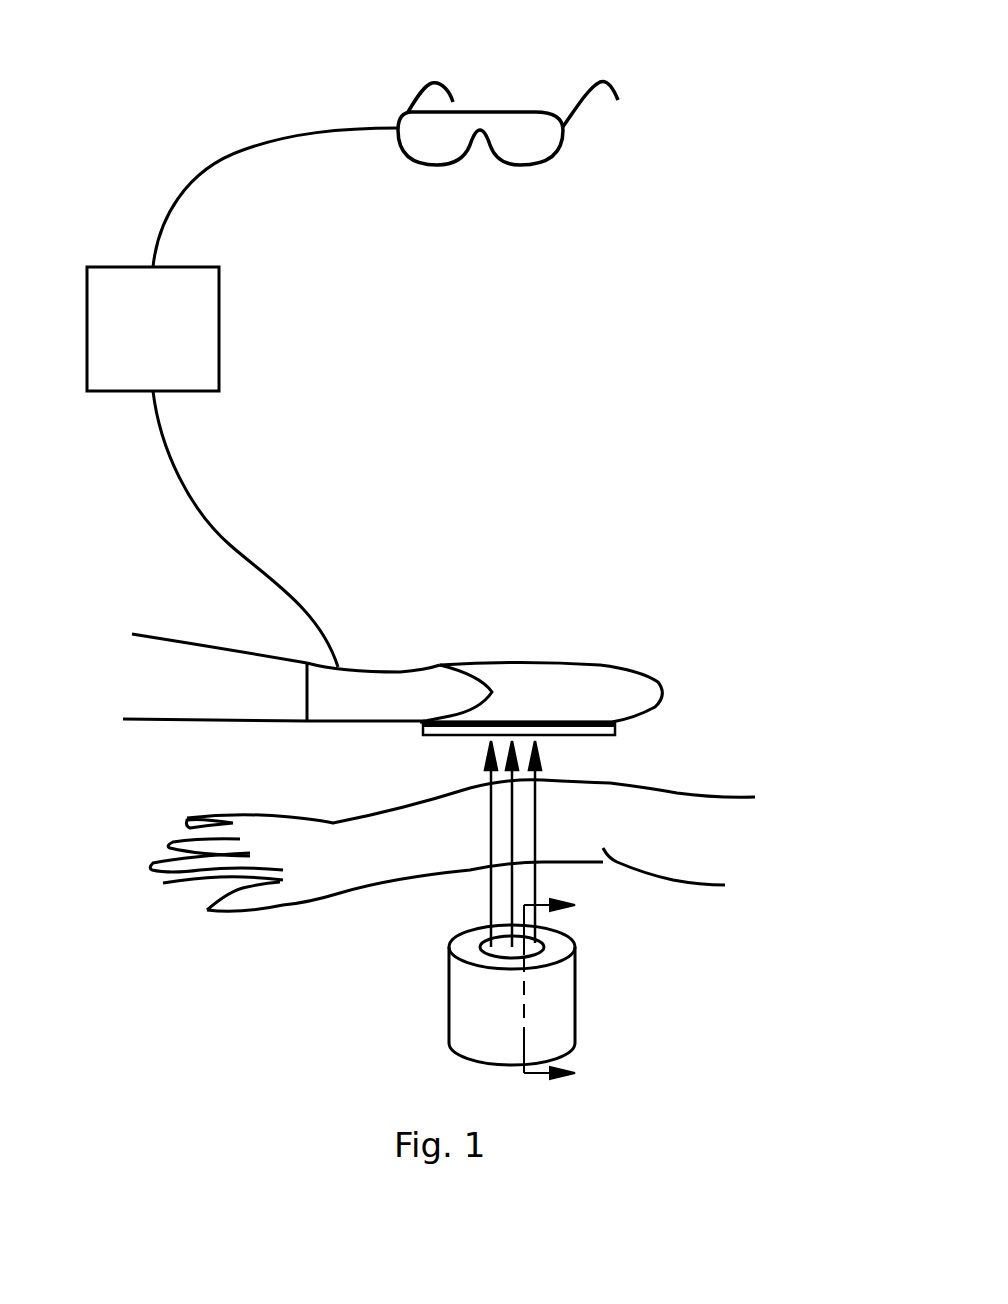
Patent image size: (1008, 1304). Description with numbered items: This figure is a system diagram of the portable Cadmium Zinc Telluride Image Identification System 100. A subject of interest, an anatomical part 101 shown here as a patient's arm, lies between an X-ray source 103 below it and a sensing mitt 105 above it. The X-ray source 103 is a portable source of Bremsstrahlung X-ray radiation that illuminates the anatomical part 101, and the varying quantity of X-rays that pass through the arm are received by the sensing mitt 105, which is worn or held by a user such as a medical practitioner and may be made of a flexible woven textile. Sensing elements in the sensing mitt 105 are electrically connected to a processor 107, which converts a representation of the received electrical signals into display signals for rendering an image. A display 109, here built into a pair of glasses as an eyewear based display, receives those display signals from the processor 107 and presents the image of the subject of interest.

The portable Cadmium Zinc Telluride Image Identification System 100 is at (667, 245).
The anatomical part 101 is at (662, 822).
The X-ray source 103 is at (462, 1015).
The sensing mitt 105 is at (582, 688).
The processor 107 is at (203, 328).
The display 109 is at (505, 108).